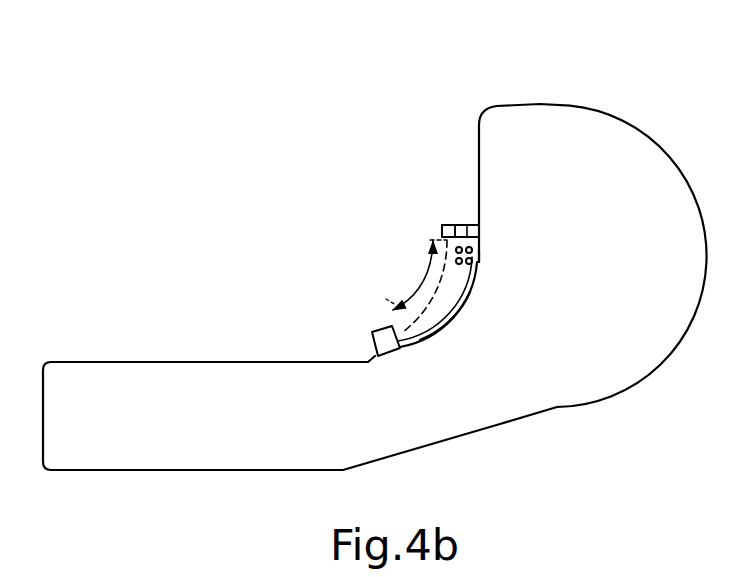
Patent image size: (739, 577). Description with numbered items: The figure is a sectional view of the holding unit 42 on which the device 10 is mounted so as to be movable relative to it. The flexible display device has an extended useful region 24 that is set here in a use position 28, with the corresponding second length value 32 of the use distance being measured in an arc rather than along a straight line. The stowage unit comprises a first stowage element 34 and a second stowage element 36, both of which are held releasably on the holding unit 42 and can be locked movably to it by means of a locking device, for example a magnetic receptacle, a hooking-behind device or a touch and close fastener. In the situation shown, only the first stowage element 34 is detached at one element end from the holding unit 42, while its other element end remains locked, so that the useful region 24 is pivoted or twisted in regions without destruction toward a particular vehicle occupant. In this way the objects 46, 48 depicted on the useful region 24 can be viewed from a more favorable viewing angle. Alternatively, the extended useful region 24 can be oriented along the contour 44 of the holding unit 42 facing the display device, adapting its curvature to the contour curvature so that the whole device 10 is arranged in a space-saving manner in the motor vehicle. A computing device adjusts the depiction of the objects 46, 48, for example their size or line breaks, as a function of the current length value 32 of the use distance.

The device 10 is at (353, 172).
The holding unit 42 is at (538, 100).
The use position 28 is at (452, 210).
The first stowage element 34 is at (442, 223).
The object 48 is at (473, 263).
The object 46 is at (478, 266).
The useful region 24 is at (463, 306).
The second length value 32 is at (427, 275).
The second stowage element 36 is at (367, 343).
The contour 44 is at (450, 323).